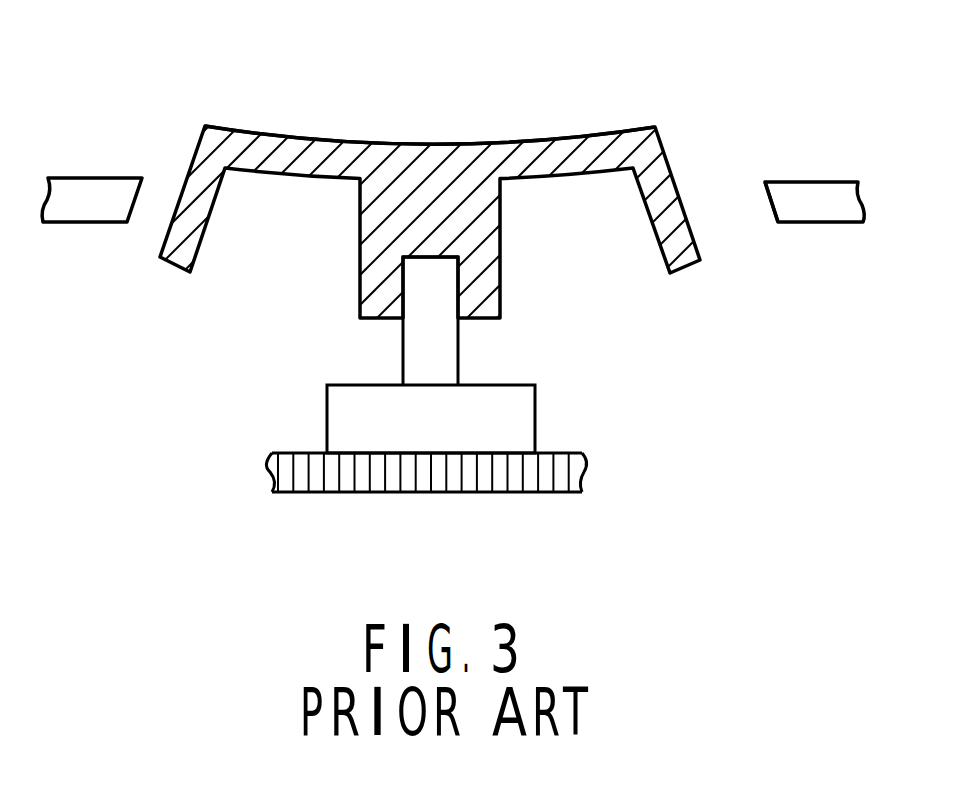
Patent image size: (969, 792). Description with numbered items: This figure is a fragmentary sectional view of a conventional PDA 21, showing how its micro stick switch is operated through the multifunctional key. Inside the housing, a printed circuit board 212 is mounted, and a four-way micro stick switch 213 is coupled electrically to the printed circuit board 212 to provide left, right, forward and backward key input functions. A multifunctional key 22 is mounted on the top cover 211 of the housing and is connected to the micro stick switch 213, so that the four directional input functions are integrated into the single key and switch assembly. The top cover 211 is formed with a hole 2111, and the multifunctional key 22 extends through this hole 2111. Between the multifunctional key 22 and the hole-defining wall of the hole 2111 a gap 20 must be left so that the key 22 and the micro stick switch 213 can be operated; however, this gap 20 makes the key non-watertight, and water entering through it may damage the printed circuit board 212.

The gap 20 is at (165, 183).
The conventional PDA 21 is at (128, 139).
The multifunctional key 22 is at (432, 117).
The top cover 211 is at (835, 193).
The hole 2111 is at (773, 202).
The printed circuit board 212 is at (572, 475).
The four-way micro stick switch 213 is at (437, 358).